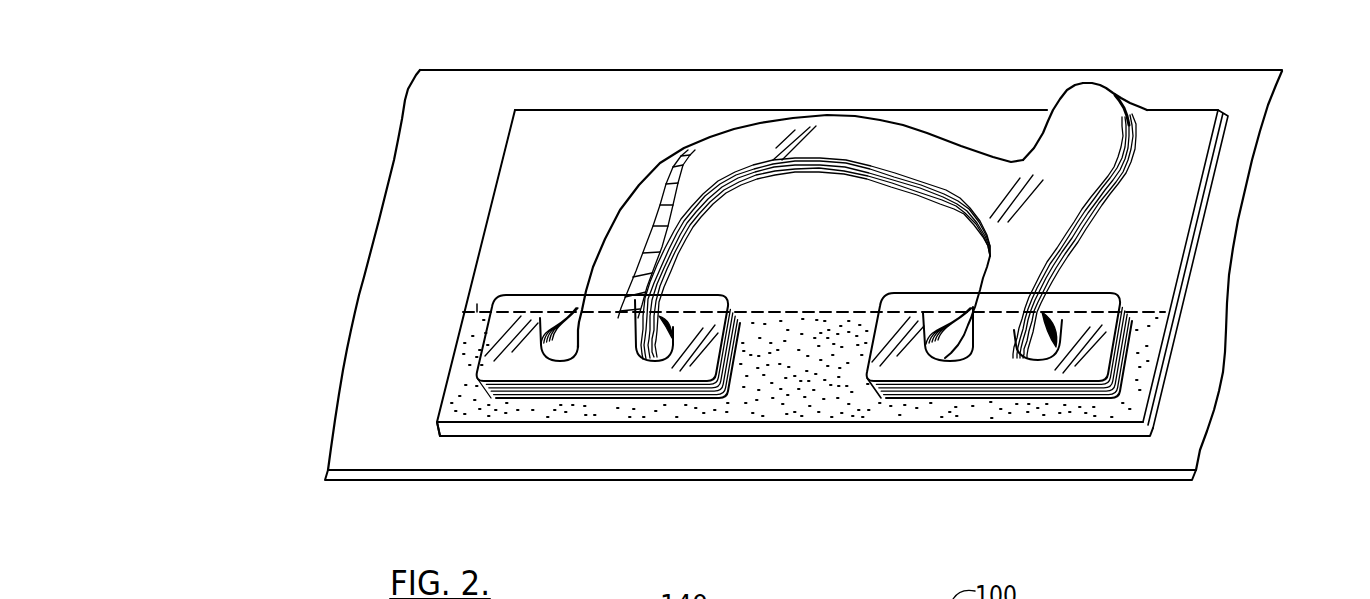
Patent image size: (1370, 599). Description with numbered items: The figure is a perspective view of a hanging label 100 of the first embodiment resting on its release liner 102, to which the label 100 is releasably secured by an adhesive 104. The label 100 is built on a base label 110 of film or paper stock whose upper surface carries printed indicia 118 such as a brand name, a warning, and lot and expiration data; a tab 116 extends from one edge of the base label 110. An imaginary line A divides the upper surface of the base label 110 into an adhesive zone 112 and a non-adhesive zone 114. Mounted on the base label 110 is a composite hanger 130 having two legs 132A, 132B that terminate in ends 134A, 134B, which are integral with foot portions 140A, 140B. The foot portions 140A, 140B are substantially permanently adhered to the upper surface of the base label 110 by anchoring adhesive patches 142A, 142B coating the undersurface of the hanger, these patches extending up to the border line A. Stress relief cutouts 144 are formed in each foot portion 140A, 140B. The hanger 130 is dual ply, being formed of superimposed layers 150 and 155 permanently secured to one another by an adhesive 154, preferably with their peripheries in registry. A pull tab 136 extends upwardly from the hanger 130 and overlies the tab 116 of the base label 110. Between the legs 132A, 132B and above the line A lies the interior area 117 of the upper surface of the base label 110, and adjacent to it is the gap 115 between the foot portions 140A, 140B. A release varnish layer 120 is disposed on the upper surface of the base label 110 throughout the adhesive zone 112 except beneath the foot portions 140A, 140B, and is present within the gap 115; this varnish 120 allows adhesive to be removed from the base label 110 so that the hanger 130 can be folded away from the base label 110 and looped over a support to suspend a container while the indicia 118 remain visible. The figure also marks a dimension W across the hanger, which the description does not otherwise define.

The label 100 is at (798, 68).
The release liner 102 is at (1185, 440).
The adhesive 104 is at (1120, 443).
The base label 110 is at (522, 172).
The adhesive zone 112 is at (453, 387).
The non-adhesive zone 114 is at (493, 182).
The gap 115 is at (790, 335).
The tab 116 is at (1137, 90).
The interior area 117 is at (827, 220).
The indicia 118 is at (686, 150).
The varnish layer 120 is at (737, 393).
The hanger 130 is at (1170, 243).
The leg 132A is at (607, 240).
The leg 132B is at (1043, 203).
The end 134A is at (588, 300).
The end 134B is at (1013, 290).
The pull tab 136 is at (1080, 100).
The foot portion 140A is at (598, 375).
The foot portion 140B is at (995, 360).
The anchoring adhesive patch 142A is at (500, 400).
The anchoring adhesive patch 142B is at (977, 398).
The stress relief cutouts 144 is at (550, 363).
The layer 150 is at (883, 397).
The adhesive 154 is at (867, 390).
The layer 155 is at (863, 383).
The strip width W is at (936, 258).
The imaginary line A is at (477, 304).